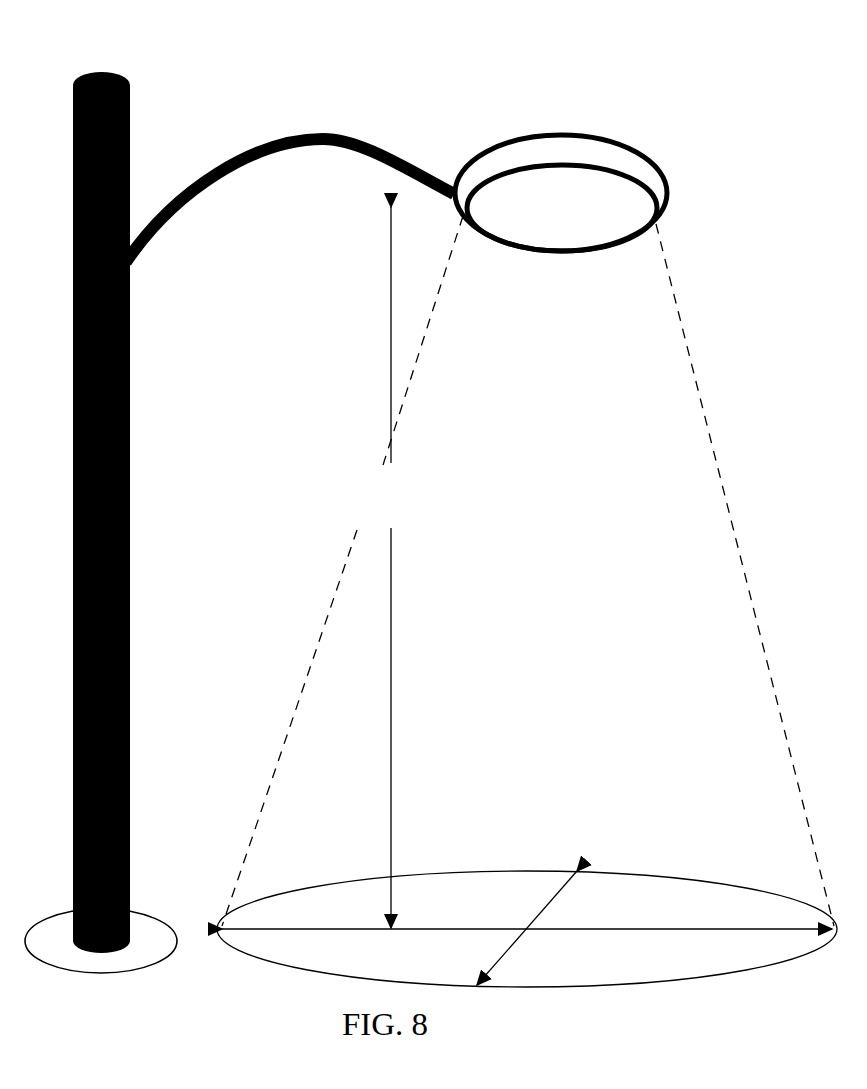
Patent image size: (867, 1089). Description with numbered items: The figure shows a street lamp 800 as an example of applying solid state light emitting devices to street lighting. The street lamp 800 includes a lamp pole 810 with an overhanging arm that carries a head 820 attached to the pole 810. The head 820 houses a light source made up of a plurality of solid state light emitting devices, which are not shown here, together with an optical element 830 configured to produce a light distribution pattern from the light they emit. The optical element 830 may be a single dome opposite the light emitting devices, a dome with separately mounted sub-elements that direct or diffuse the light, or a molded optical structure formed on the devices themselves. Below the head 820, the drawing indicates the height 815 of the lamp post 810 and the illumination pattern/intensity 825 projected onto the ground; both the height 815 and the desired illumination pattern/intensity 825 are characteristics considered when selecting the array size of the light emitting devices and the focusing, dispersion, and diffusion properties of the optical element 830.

The street lamp 800 is at (188, 37).
The lamp pole 810 is at (130, 466).
The height 815 is at (391, 567).
The head 820 is at (638, 152).
The illumination pattern/intensity 825 is at (635, 873).
The optical element 830 is at (648, 212).